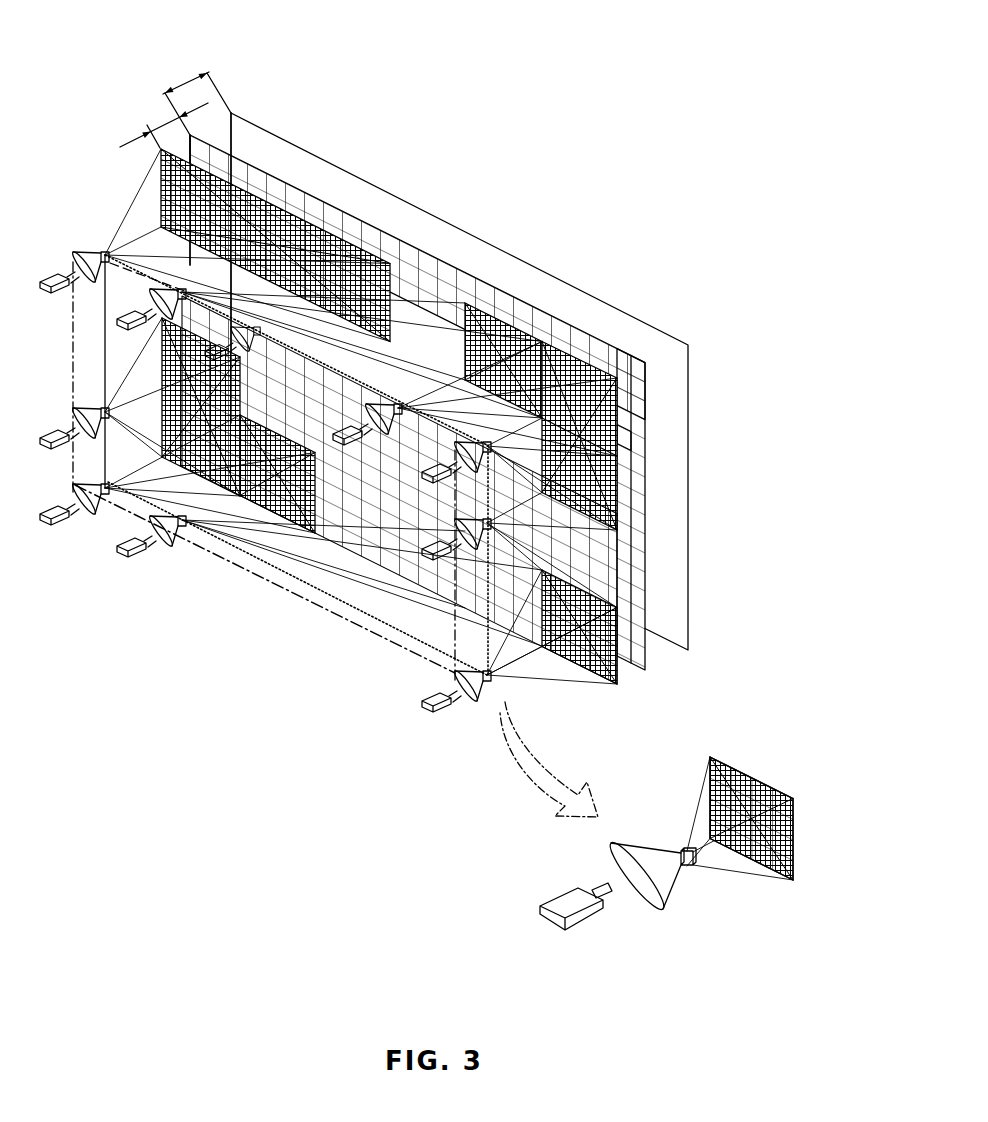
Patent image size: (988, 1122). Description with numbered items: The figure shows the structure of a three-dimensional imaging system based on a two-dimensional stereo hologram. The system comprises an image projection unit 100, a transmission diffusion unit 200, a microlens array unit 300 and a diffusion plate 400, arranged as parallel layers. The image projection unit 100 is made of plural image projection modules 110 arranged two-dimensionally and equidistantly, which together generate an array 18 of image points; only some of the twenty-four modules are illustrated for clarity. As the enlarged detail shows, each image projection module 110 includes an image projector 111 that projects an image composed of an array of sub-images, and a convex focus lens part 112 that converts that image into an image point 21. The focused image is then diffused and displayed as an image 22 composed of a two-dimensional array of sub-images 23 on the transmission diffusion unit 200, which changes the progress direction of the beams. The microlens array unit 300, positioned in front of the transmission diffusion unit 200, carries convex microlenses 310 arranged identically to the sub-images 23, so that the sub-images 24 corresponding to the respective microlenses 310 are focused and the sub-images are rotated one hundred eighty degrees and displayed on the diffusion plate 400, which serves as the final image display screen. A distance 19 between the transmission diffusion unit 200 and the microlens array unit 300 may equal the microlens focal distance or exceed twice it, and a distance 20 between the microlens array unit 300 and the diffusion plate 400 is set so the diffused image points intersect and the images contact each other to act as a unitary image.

The array of image points 18 is at (283, 588).
The distance between the prism array plate and the microlens array unit 19 is at (155, 128).
The distance between the microlens array unit and the diffusion plate 20 is at (175, 78).
The image point 21 is at (690, 867).
The image 22 is at (780, 880).
The sub-images 23 is at (712, 758).
The sub-images corresponding to the microlenses 24 is at (620, 447).
The image projection unit 100 is at (321, 640).
The image projection module 110 is at (616, 850).
The image projector 111 is at (558, 907).
The focus lens part 112 is at (648, 898).
The transmission diffusion unit 200 is at (620, 483).
The microlens array unit 300 is at (485, 402).
The microlenses 310 is at (642, 390).
The diffusion plate 400 is at (687, 598).